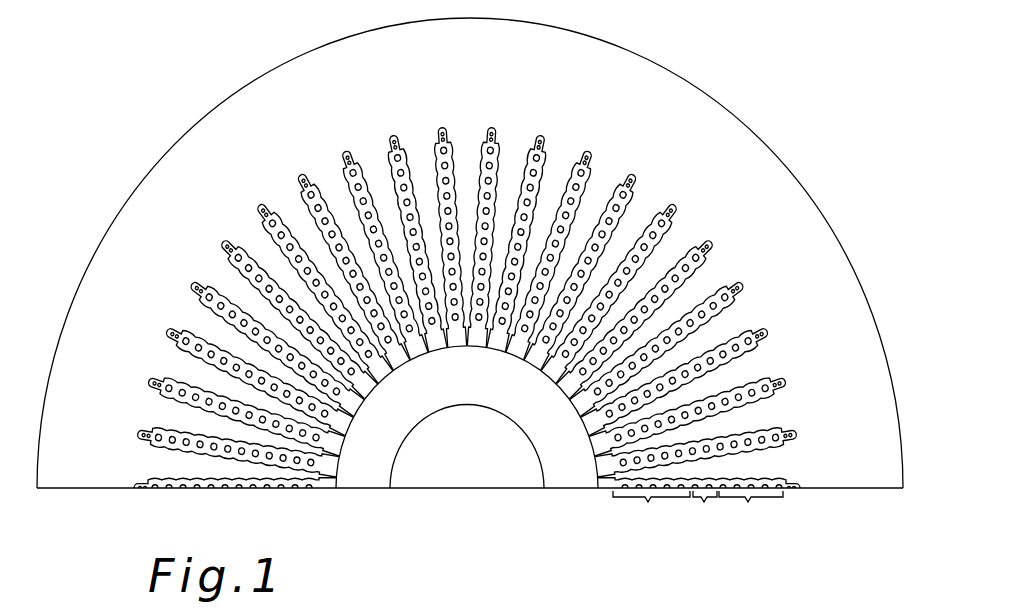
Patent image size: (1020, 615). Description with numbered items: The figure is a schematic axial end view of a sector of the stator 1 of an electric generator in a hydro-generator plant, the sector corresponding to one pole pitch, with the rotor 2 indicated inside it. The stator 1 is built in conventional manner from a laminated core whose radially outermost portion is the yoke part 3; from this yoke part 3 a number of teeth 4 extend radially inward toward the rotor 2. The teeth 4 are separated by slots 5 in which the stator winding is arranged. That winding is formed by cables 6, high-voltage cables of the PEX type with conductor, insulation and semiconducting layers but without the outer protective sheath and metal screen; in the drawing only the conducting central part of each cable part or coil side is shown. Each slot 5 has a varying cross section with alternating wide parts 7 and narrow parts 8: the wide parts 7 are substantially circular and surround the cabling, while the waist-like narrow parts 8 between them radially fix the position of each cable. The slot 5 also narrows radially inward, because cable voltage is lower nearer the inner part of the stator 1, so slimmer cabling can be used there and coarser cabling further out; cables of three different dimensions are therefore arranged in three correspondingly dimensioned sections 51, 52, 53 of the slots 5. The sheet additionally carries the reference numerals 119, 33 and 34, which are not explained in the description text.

The stator 1 is at (792, 138).
The rotor 2 is at (502, 462).
The yoke part 3 is at (627, 62).
The teeth 4 is at (643, 282).
The slots 5 is at (720, 305).
The cables 6 is at (745, 361).
The wide parts 7 is at (700, 267).
The narrow parts 8 is at (690, 274).
The slot insulation 119 is at (579, 158).
The section of slots 51 is at (751, 507).
The section of slots 52 is at (704, 507).
The section of slots 53 is at (651, 507).
The winding segment 33 is at (555, 606).
The winding segment 34 is at (375, 606).